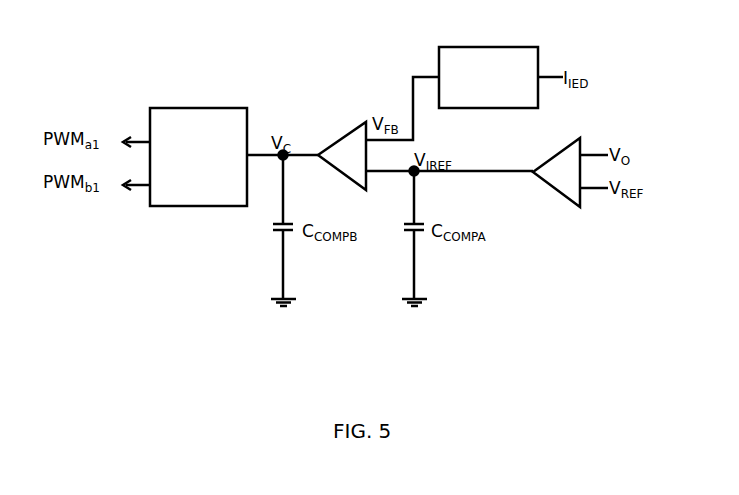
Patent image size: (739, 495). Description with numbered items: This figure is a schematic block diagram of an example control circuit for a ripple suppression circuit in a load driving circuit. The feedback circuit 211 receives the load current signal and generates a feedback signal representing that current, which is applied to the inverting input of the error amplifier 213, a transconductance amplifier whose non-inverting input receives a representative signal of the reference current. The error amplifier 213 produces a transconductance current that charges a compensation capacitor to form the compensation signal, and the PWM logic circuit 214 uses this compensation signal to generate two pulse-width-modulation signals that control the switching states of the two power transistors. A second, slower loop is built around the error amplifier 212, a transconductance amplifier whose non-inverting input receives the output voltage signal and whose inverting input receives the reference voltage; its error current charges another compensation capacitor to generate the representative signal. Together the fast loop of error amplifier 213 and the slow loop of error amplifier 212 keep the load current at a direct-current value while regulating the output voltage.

The feedback circuit 211 is at (488, 47).
The error amplifier 212 is at (555, 154).
The error amplifier 213 is at (343, 137).
The PWM logic circuit 214 is at (198, 108).